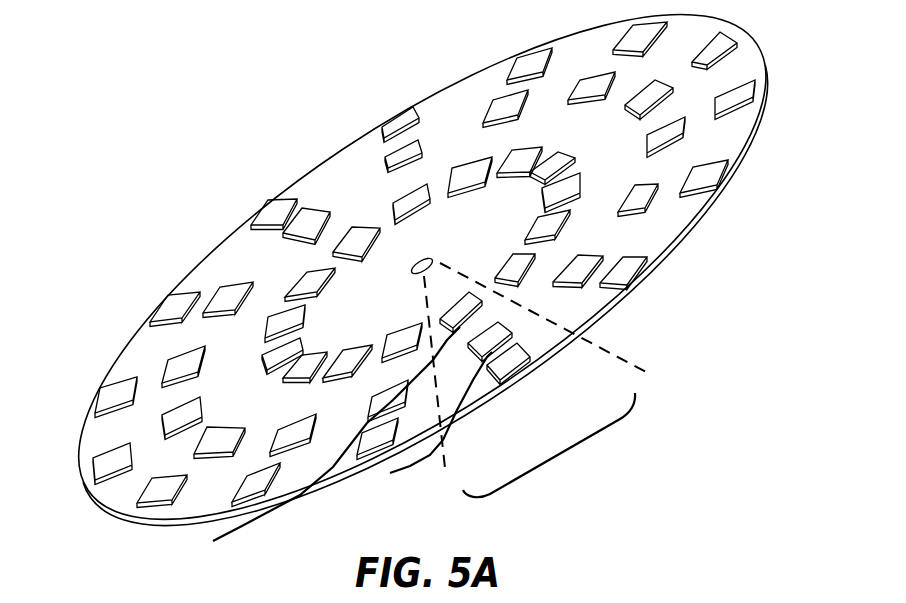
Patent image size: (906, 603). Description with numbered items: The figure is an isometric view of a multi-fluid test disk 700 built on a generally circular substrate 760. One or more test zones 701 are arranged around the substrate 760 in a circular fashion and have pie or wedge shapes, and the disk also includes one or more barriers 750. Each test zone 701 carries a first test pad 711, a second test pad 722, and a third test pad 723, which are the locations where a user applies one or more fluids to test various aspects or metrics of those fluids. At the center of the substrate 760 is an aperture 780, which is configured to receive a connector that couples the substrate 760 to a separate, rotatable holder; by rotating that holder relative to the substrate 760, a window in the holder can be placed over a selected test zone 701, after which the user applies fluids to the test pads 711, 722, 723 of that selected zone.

The multi-fluid test disk 700 is at (148, 78).
The test zone 701 is at (560, 458).
The first test pad 711 is at (461, 300).
The second test pad 722 is at (479, 345).
The third test pad 723 is at (508, 354).
The barrier 750 is at (327, 448).
The substrate 760 is at (123, 343).
The aperture 780 is at (412, 260).